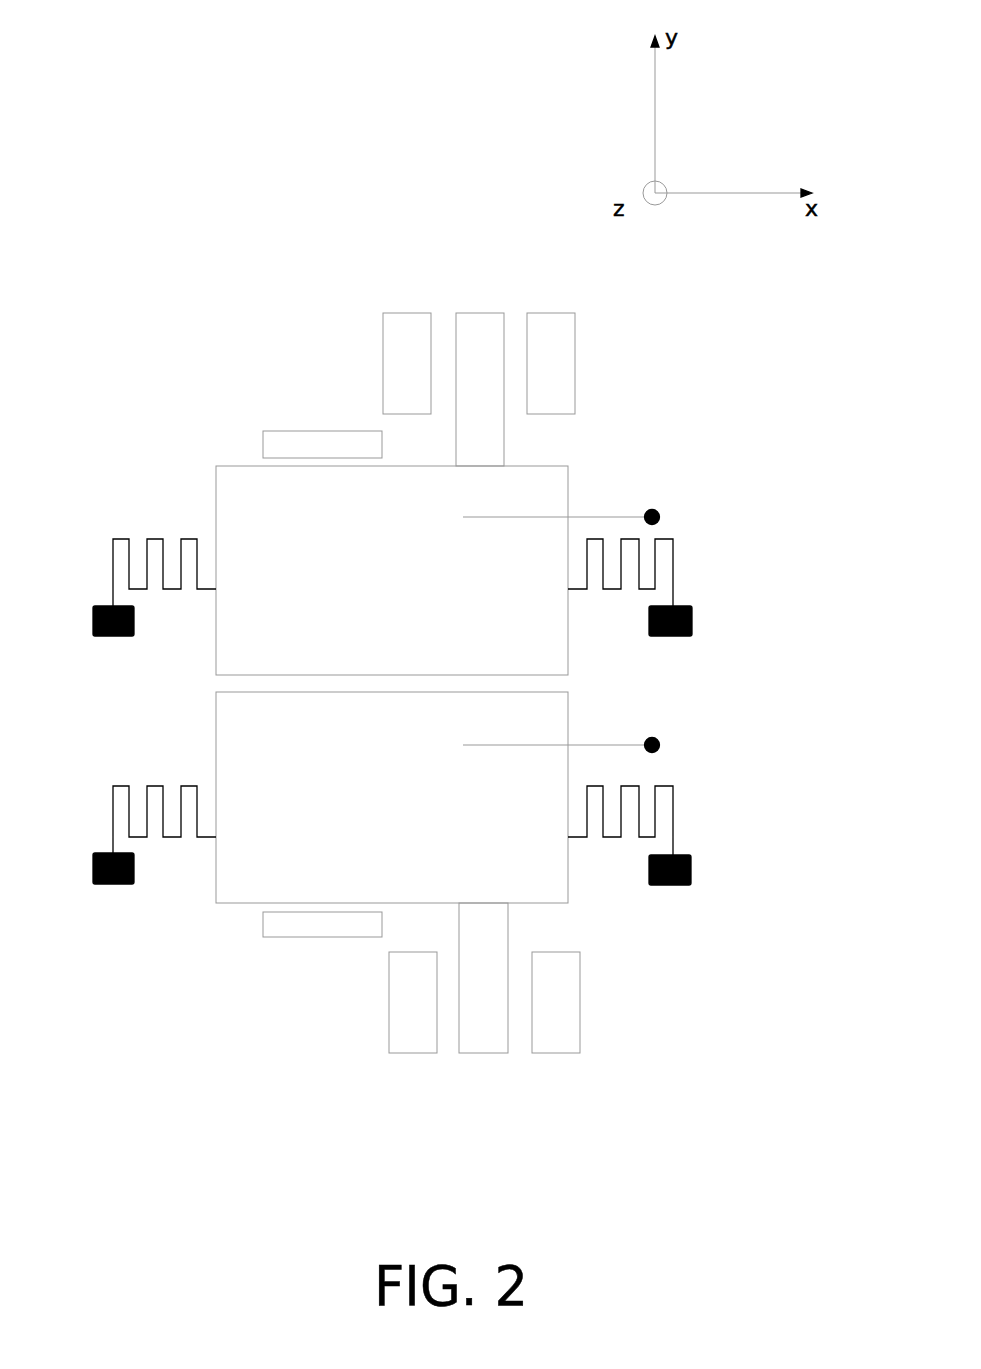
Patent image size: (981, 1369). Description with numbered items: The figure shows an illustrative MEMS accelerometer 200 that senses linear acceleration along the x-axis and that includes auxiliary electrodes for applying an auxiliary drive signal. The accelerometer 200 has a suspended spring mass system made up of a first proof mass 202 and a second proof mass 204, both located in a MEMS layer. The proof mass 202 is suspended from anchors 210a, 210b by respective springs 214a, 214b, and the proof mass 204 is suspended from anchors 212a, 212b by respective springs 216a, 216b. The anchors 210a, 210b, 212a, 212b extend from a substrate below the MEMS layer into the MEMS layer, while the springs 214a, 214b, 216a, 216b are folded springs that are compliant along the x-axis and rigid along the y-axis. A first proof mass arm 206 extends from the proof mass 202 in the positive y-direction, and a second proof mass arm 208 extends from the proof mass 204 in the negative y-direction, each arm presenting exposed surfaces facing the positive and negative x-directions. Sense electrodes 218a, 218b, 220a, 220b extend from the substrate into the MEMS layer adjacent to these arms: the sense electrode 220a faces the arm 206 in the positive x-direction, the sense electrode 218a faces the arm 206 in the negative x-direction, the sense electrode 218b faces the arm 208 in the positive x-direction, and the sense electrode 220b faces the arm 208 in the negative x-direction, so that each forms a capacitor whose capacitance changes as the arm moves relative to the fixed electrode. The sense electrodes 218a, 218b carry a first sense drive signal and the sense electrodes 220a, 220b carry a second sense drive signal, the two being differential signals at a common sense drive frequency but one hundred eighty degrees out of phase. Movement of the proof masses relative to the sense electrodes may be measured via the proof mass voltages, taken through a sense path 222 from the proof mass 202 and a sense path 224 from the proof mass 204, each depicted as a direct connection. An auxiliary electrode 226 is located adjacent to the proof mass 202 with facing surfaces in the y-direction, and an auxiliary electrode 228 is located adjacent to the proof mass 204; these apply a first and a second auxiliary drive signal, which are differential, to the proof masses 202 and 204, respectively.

The accelerometer 200 is at (126, 313).
The proof mass 202 is at (216, 527).
The proof mass 204 is at (216, 752).
The first proof mass arm 206 is at (478, 313).
The second proof mass arm 208 is at (483, 1053).
The anchor 210a is at (93, 622).
The anchor 210b is at (692, 622).
The anchor 212a is at (93, 870).
The anchor 212b is at (691, 870).
The spring 214a is at (178, 616).
The spring 214b is at (611, 614).
The spring 216a is at (178, 863).
The spring 216b is at (611, 861).
The sense electrode 218a is at (575, 347).
The sense electrode 218b is at (389, 1023).
The sense electrode 220a is at (383, 364).
The sense electrode 220b is at (580, 1013).
The sense path 222 is at (590, 517).
The sense path 224 is at (587, 745).
The auxiliary electrode 226 is at (263, 448).
The auxiliary electrode 228 is at (263, 923).